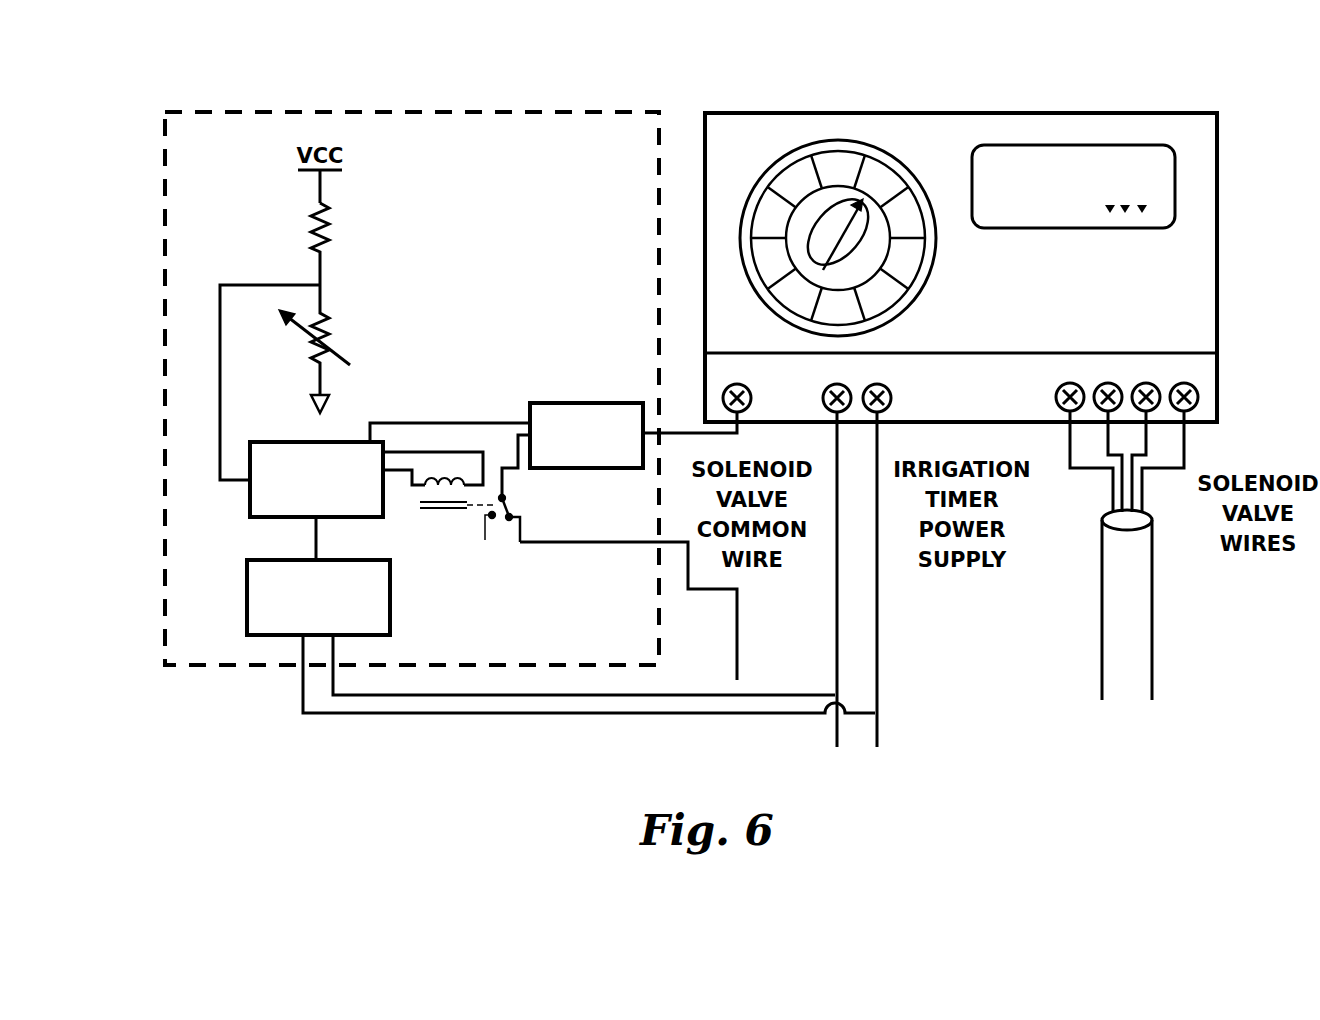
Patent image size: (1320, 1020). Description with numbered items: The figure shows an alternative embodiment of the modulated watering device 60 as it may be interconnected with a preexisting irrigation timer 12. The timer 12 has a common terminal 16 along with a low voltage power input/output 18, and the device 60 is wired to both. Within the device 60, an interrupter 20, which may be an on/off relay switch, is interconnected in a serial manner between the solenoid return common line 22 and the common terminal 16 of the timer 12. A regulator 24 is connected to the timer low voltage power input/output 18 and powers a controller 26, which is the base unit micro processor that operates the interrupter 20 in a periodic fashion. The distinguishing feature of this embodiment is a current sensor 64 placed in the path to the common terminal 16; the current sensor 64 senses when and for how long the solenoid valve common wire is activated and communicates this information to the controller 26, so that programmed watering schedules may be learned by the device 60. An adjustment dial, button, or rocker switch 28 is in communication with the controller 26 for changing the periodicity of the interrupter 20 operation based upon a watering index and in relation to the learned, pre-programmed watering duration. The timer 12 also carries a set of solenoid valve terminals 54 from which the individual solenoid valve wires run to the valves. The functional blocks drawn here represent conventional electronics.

The irrigation timer 12 is at (1163, 112).
The common terminal 16 is at (722, 400).
The low voltage power input/output 18 is at (862, 362).
The interrupter 20 is at (447, 513).
The solenoid return common line 22 is at (734, 666).
The regulator 24 is at (390, 593).
The controller 26 is at (335, 441).
The adjustment dial 28 is at (330, 343).
The solenoid valve terminals 54 is at (1126, 377).
The device 60 is at (585, 104).
The current sensor 64 is at (588, 403).